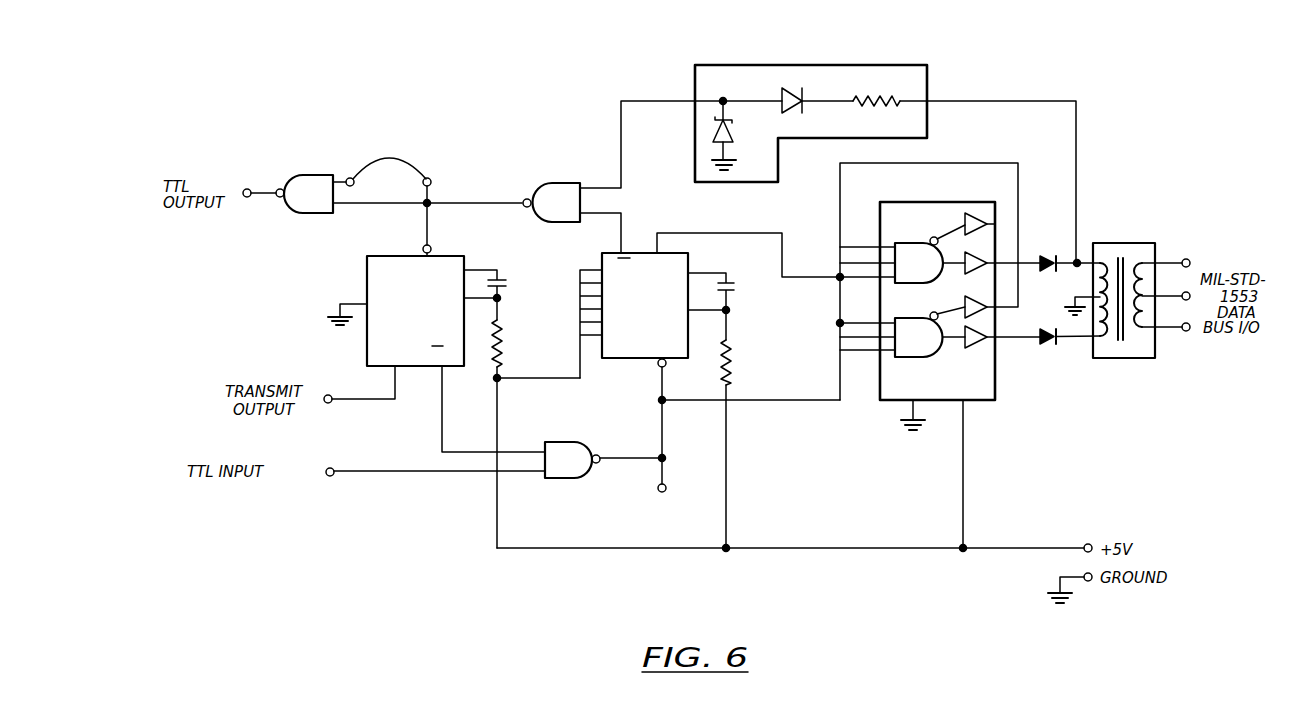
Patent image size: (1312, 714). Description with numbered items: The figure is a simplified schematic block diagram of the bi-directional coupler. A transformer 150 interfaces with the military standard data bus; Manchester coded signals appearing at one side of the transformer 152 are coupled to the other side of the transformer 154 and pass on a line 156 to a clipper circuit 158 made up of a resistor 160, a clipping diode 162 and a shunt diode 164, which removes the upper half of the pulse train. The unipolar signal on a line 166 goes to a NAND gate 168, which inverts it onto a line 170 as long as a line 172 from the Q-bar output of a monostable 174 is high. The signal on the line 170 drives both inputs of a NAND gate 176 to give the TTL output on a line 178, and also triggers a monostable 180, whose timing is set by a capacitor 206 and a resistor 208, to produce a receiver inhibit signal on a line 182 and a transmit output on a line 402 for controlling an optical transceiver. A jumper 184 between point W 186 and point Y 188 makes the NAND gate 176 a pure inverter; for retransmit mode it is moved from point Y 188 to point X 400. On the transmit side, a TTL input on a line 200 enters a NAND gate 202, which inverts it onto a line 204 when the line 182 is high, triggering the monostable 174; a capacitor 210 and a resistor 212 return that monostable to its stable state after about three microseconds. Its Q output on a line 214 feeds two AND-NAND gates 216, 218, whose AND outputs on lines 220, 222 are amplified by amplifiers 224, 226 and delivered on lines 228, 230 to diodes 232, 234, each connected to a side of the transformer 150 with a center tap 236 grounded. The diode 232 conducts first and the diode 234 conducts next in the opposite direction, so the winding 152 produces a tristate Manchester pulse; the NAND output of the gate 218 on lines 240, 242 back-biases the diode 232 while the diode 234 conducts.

The transformer 150 is at (1138, 358).
The winding 152 is at (1141, 262).
The winding 154 is at (1100, 262).
The line 156 is at (1077, 126).
The clipper circuit 158 is at (891, 65).
The resistor 160 is at (858, 104).
The clipping diode 162 is at (780, 105).
The shunt diode 164 is at (712, 134).
The line 166 is at (620, 122).
The NAND gate 168 is at (553, 183).
The line 170 is at (488, 203).
The line 172 is at (622, 233).
The monostable 174 is at (614, 358).
The NAND gate 176 is at (305, 175).
The line 178 is at (251, 191).
The monostable 180 is at (367, 274).
The line 182 is at (441, 432).
The jumper 184 is at (383, 158).
The point W 186 is at (354, 186).
The point Y 188 is at (427, 178).
The line 200 is at (420, 472).
The NAND gate 202 is at (577, 478).
The line 204 is at (643, 430).
The capacitor 206 is at (502, 278).
The resistor 208 is at (498, 342).
The capacitor 210 is at (727, 280).
The resistor 212 is at (728, 350).
The line 214 is at (745, 233).
The AND-NAND gate 216 is at (908, 243).
The AND-NAND gate 218 is at (912, 357).
The line 220 is at (944, 272).
The line 222 is at (944, 347).
The amplifier 224 is at (962, 236).
The amplifier 226 is at (982, 348).
The line 228 is at (1027, 262).
The line 230 is at (1018, 338).
The diode 232 is at (1032, 265).
The diode 234 is at (1054, 345).
The center tap 236 is at (1087, 284).
The line 240 is at (936, 314).
The line 242 is at (838, 217).
The point X 400 is at (665, 487).
The line 402 is at (355, 399).